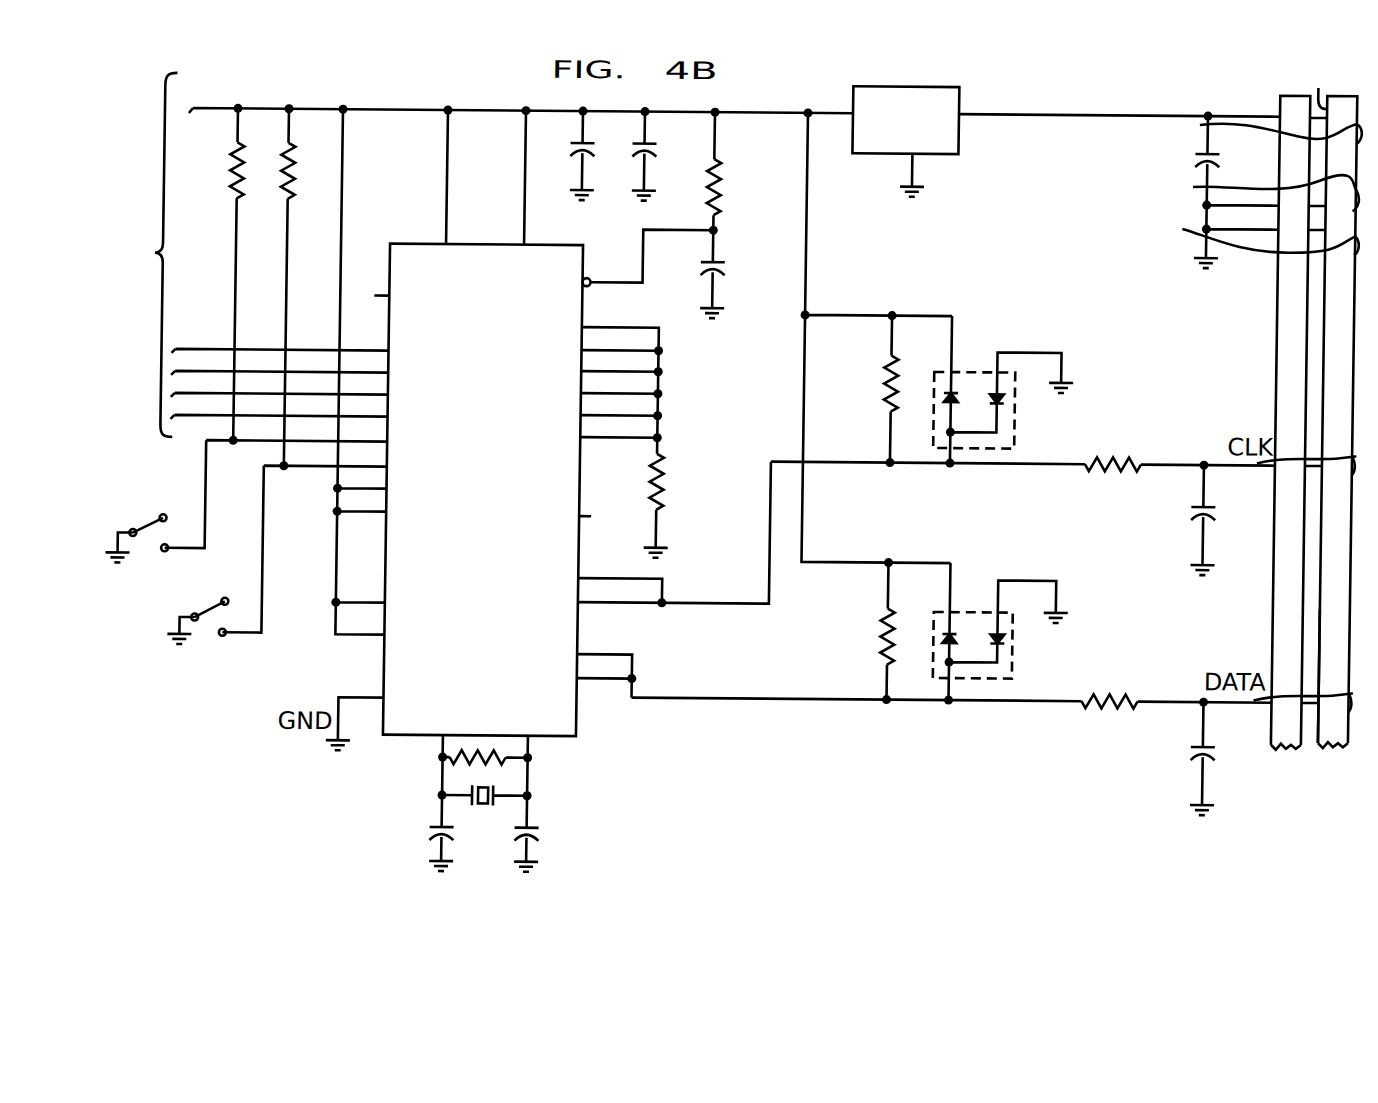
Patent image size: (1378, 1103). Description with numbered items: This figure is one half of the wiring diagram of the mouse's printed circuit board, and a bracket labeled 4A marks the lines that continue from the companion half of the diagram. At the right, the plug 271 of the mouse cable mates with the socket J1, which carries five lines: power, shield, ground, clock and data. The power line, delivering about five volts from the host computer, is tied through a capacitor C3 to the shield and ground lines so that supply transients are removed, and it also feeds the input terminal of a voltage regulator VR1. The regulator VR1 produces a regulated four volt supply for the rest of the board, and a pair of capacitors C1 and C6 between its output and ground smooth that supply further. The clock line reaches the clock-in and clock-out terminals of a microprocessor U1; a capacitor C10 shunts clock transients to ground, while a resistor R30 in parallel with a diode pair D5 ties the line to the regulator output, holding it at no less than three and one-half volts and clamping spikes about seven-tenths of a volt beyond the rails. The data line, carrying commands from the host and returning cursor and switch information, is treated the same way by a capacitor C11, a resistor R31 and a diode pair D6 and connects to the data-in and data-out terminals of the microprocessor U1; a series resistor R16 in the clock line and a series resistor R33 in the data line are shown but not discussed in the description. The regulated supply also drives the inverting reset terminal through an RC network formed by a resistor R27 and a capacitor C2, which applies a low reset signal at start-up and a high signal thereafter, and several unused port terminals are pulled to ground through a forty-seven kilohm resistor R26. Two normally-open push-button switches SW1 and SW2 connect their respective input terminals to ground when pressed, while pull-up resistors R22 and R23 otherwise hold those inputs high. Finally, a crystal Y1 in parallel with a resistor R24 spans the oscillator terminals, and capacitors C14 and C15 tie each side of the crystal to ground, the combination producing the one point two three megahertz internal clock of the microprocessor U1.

The connection to FIG. 4A circuitry 4A is at (256, 255).
The pull-up resistor R22 is at (203, 276).
The pull-up resistor R23 is at (296, 178).
The resistor R27 is at (740, 187).
The resistor R26 is at (681, 512).
The resistor R30 is at (864, 389).
The resistor R31 is at (861, 631).
The resistor R16 100 ohm R16 is at (1111, 464).
The resistor R33 100 ohm R33 is at (1109, 702).
The resistor R24 is at (498, 764).
The capacitor C6 is at (590, 170).
The capacitor C1 is at (650, 170).
The capacitor C2 is at (722, 296).
The capacitor C3 is at (1232, 206).
The capacitor C10 is at (1178, 535).
The capacitor C11 is at (1221, 773).
The capacitor C14 is at (412, 856).
The capacitor C15 is at (552, 858).
The diode pair D5 is at (1028, 390).
The diode pair D6 is at (1025, 632).
The microprocessor U1 is at (466, 489).
The voltage regulator VR1 is at (905, 141).
The crystal Y1 is at (489, 805).
The switch SW1 is at (244, 517).
The switch SW2 is at (271, 571).
The socket J1 is at (1278, 97).
The plug 271 is at (1331, 717).